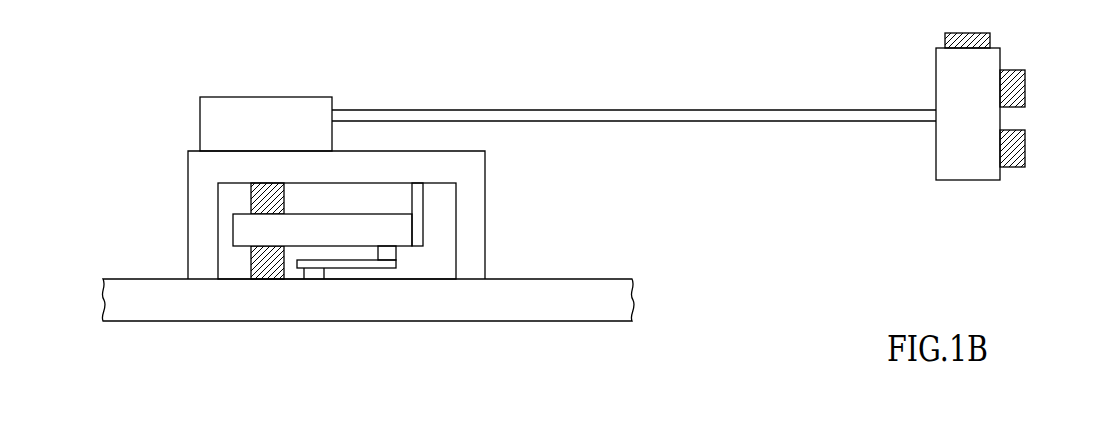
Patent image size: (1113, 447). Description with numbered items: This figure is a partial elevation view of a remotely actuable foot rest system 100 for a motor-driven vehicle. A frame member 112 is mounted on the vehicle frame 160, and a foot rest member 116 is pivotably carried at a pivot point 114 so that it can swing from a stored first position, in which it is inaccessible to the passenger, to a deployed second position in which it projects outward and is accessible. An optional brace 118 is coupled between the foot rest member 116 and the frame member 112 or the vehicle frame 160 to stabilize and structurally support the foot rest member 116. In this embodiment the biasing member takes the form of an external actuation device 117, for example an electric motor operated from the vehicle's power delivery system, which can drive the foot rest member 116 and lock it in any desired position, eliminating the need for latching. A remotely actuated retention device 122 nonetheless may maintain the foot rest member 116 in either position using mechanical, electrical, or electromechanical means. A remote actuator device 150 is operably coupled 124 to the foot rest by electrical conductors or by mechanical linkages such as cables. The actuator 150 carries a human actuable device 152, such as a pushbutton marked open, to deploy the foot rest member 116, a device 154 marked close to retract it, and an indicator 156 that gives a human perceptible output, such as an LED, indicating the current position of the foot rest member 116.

The remotely actuable foot rest system 100 is at (753, 57).
The frame member 112 is at (476, 207).
The pivot point 114 is at (249, 203).
The foot rest member 116 is at (344, 240).
The external actuation device 117 is at (280, 133).
The brace 118 is at (375, 268).
The remotely actuated retention device 122 is at (425, 192).
The operable coupling 124 is at (753, 122).
The remote actuator device 150 is at (973, 195).
The deploy device 152 is at (1025, 85).
The retract device 154 is at (1025, 145).
The indicator 156 is at (967, 33).
The vehicle frame 160 is at (505, 307).